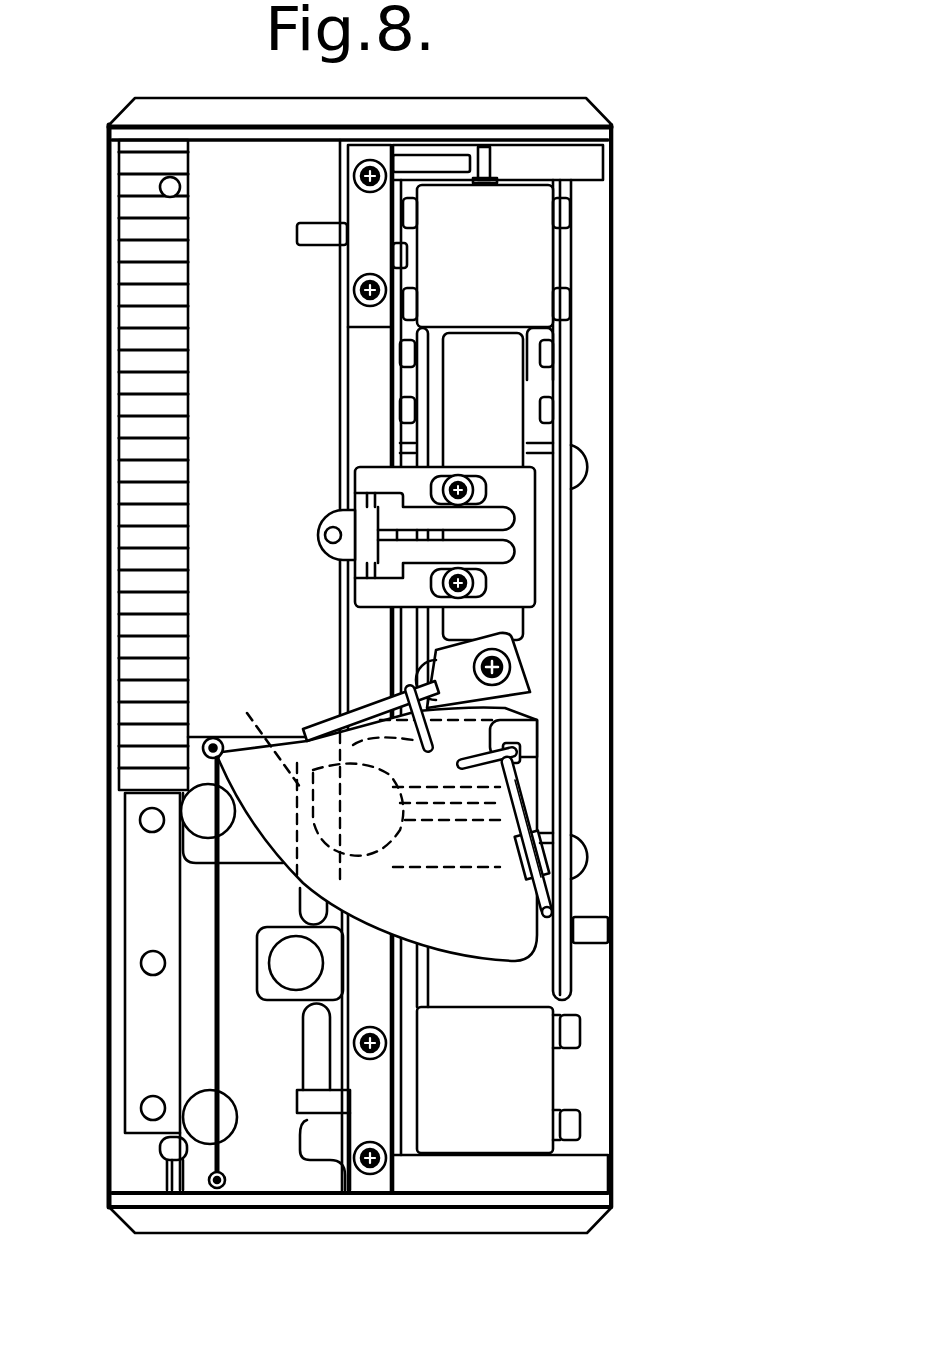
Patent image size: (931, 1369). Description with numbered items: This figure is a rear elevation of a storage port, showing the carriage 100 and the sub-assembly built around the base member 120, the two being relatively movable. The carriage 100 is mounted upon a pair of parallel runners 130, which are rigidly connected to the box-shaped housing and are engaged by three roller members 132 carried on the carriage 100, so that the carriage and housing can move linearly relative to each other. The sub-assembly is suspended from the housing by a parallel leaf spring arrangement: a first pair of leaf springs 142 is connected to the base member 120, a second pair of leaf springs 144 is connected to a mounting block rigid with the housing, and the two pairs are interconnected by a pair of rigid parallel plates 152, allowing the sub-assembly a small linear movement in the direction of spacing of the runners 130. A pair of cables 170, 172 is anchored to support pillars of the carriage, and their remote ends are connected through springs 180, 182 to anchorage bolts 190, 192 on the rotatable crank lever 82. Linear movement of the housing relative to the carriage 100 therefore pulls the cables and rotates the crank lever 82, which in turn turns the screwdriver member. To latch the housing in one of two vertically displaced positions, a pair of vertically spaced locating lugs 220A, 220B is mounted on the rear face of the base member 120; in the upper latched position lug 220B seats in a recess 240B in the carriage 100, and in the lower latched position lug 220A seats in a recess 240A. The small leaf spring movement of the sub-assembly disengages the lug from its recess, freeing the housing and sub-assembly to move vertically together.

The crank lever 82 is at (520, 940).
The carriage 100 is at (143, 1080).
The base member 120 is at (497, 383).
The runners 130 is at (343, 172).
The roller members 132 is at (283, 946).
The first pair of leaf springs 142 is at (552, 255).
The second pair of leaf springs 144 is at (553, 1063).
The rigid parallel plates 152 is at (427, 384).
The cable 170 is at (213, 1005).
The cable 172 is at (566, 888).
The spring 180 is at (337, 720).
The spring 182 is at (520, 838).
The anchorage bolt 190 is at (530, 693).
The anchorage bolt 192 is at (520, 757).
The locating lug 220A is at (353, 518).
The locating lug 220B is at (398, 824).
The recess 240A is at (307, 1120).
The recess 240B is at (252, 732).